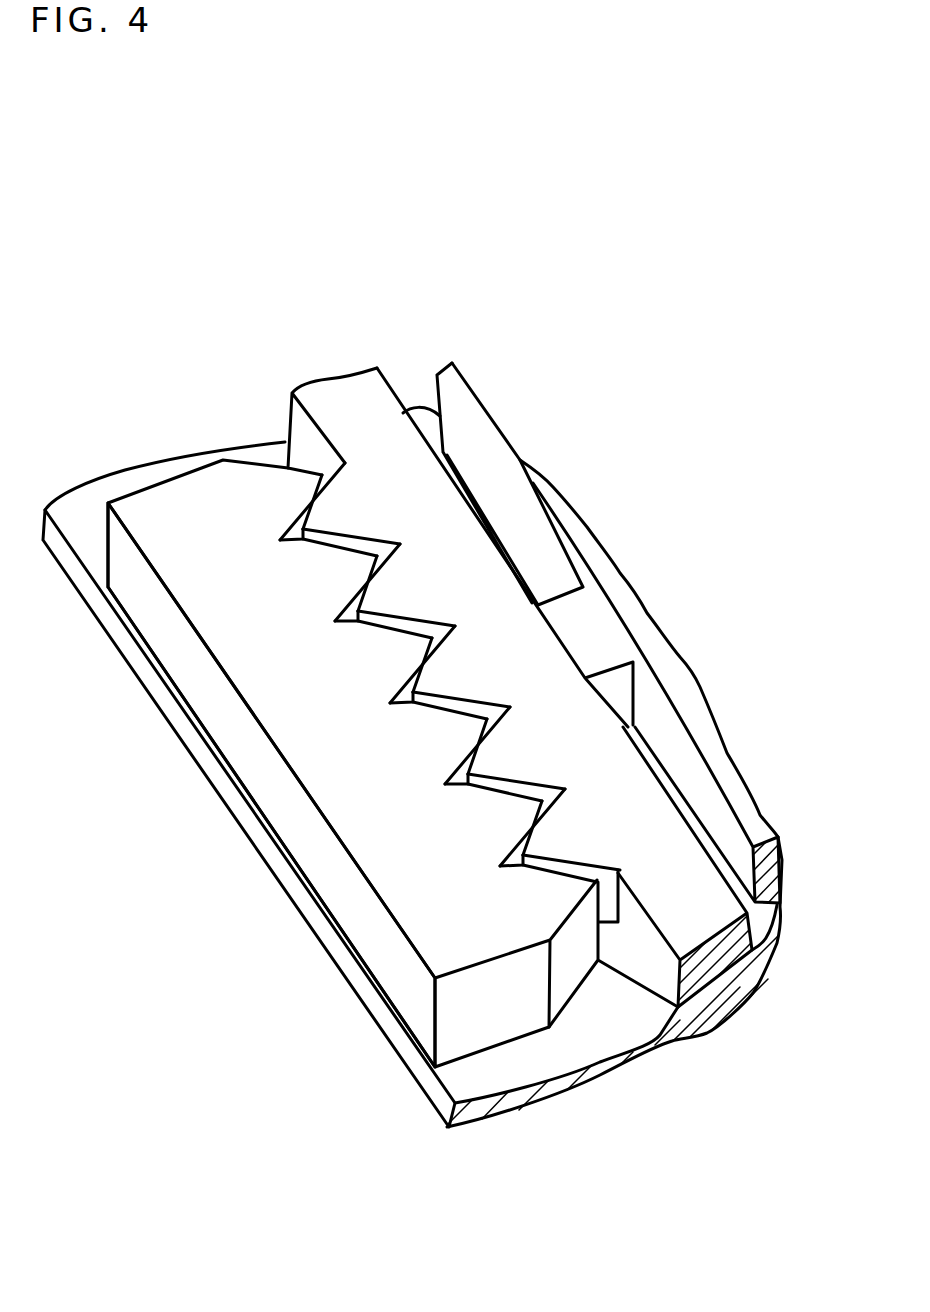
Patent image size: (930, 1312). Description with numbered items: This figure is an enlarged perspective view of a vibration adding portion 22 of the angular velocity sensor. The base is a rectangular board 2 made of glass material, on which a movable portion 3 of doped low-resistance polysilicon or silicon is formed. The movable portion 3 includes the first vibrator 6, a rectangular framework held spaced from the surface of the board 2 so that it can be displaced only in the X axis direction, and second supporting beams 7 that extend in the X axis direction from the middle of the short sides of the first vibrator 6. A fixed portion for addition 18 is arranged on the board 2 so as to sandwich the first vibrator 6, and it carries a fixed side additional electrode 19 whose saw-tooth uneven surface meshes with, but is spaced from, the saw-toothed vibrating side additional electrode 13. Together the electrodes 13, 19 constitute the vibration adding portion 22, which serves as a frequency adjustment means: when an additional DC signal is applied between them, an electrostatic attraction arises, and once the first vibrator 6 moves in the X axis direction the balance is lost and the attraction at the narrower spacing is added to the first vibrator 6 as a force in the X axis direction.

The board 2 is at (571, 1070).
The movable portion 3 is at (491, 414).
The first vibrator 6 is at (378, 393).
The second supporting beam 7 is at (530, 483).
The vibrating side additional electrode 13 is at (565, 835).
The fixed portion for addition 18 is at (355, 846).
The fixed side additional electrode 19 is at (398, 647).
The vibration adding portion 22 is at (290, 458).